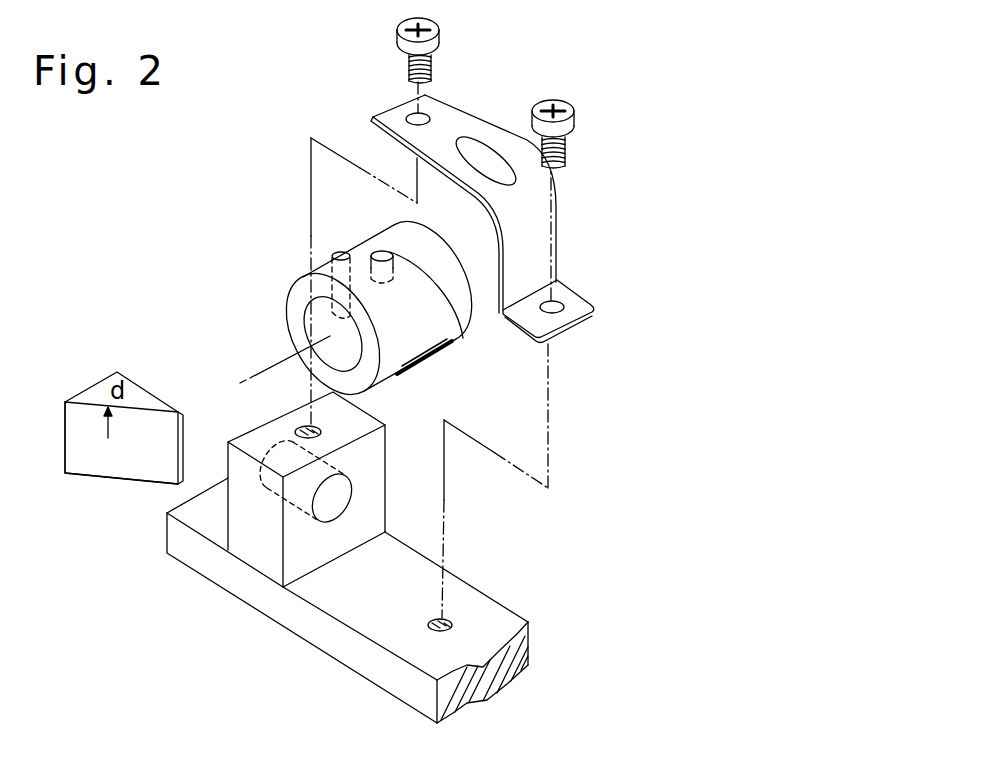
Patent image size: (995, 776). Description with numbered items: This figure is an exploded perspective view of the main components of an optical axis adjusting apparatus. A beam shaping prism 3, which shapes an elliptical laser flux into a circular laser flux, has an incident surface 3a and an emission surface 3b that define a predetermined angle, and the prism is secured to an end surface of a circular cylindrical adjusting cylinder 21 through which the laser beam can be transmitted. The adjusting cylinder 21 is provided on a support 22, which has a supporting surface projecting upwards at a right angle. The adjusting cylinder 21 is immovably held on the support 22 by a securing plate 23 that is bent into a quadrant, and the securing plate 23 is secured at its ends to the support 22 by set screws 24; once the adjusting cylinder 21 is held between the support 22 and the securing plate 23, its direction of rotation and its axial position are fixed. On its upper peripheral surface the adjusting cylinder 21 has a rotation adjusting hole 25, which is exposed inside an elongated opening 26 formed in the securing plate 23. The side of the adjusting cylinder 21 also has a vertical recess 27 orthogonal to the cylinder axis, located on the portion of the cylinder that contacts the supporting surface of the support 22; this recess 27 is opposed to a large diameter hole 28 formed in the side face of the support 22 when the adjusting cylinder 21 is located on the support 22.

The beam shaping prism 3 is at (122, 455).
The incident surface 3a is at (77, 467).
The emission surface 3b is at (130, 371).
The adjusting cylinder 21 is at (390, 355).
The support 22 is at (335, 637).
The securing plate 23 is at (445, 125).
The set screws 24 is at (432, 33).
The rotation adjusting hole 25 is at (463, 338).
The elongated opening 26 is at (488, 143).
The vertical recess 27 is at (343, 253).
The large diameter hole 28 is at (335, 504).